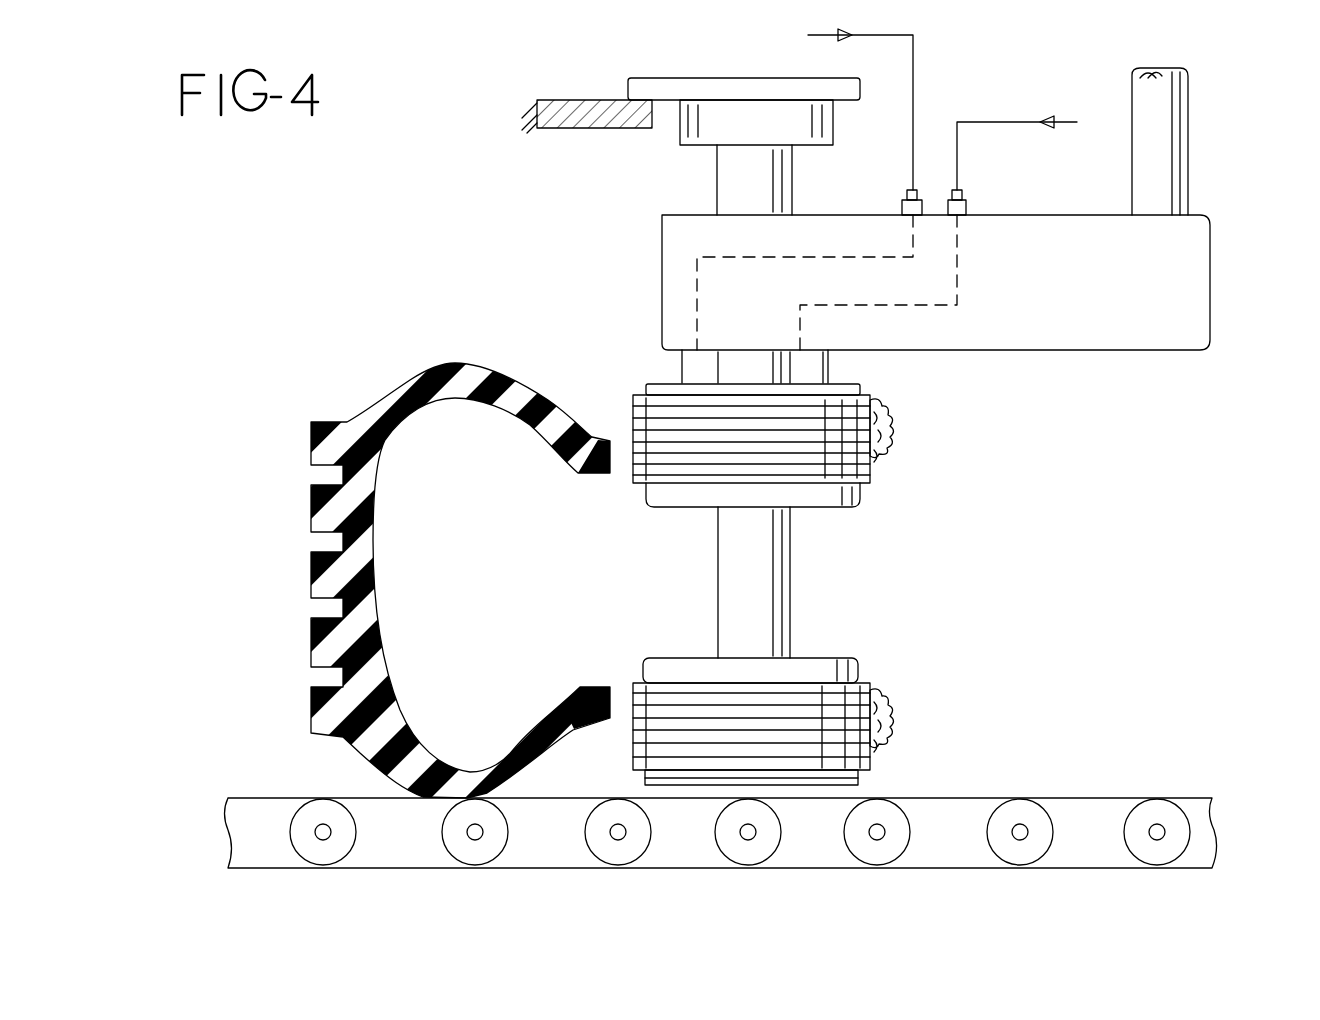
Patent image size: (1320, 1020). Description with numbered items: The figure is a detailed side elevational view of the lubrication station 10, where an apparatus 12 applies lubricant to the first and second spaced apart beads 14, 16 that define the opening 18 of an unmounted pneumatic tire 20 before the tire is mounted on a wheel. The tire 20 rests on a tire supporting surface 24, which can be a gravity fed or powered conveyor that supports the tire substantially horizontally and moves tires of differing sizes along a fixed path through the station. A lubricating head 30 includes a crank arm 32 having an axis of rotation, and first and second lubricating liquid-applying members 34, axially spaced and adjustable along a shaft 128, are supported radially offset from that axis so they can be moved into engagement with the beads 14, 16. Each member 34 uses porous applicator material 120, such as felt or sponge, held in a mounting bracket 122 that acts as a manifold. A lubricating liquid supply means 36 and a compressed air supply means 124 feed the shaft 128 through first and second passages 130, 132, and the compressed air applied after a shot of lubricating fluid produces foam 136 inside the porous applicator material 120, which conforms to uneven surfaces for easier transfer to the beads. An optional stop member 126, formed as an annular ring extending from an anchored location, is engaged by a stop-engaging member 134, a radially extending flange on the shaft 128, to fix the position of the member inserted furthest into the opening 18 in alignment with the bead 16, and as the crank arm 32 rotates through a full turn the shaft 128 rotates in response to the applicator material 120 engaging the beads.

The lubrication station 10 is at (1205, 597).
The apparatus 12 is at (671, 113).
The first bead 14 is at (612, 460).
The second bead 16 is at (612, 702).
The opening 18 is at (608, 415).
The unmounted pneumatic tire 20 is at (311, 495).
The tire supporting surface 24 is at (1020, 797).
The lubricating head 30 is at (1202, 120).
The crank arm 32 is at (1195, 232).
The lubricating liquid-applying member 34 is at (830, 507).
The lubricating liquid supply means 36 is at (1050, 118).
The porous applicator material 120 is at (839, 631).
The mounting bracket 122 is at (848, 383).
The compressed air supply means 124 is at (850, 22).
The stop member 126 is at (572, 122).
The shaft 128 is at (735, 172).
The first passage 130 is at (735, 256).
The second passage 132 is at (957, 262).
The stop-engaging member 134 is at (643, 82).
The foam 136 is at (890, 446).